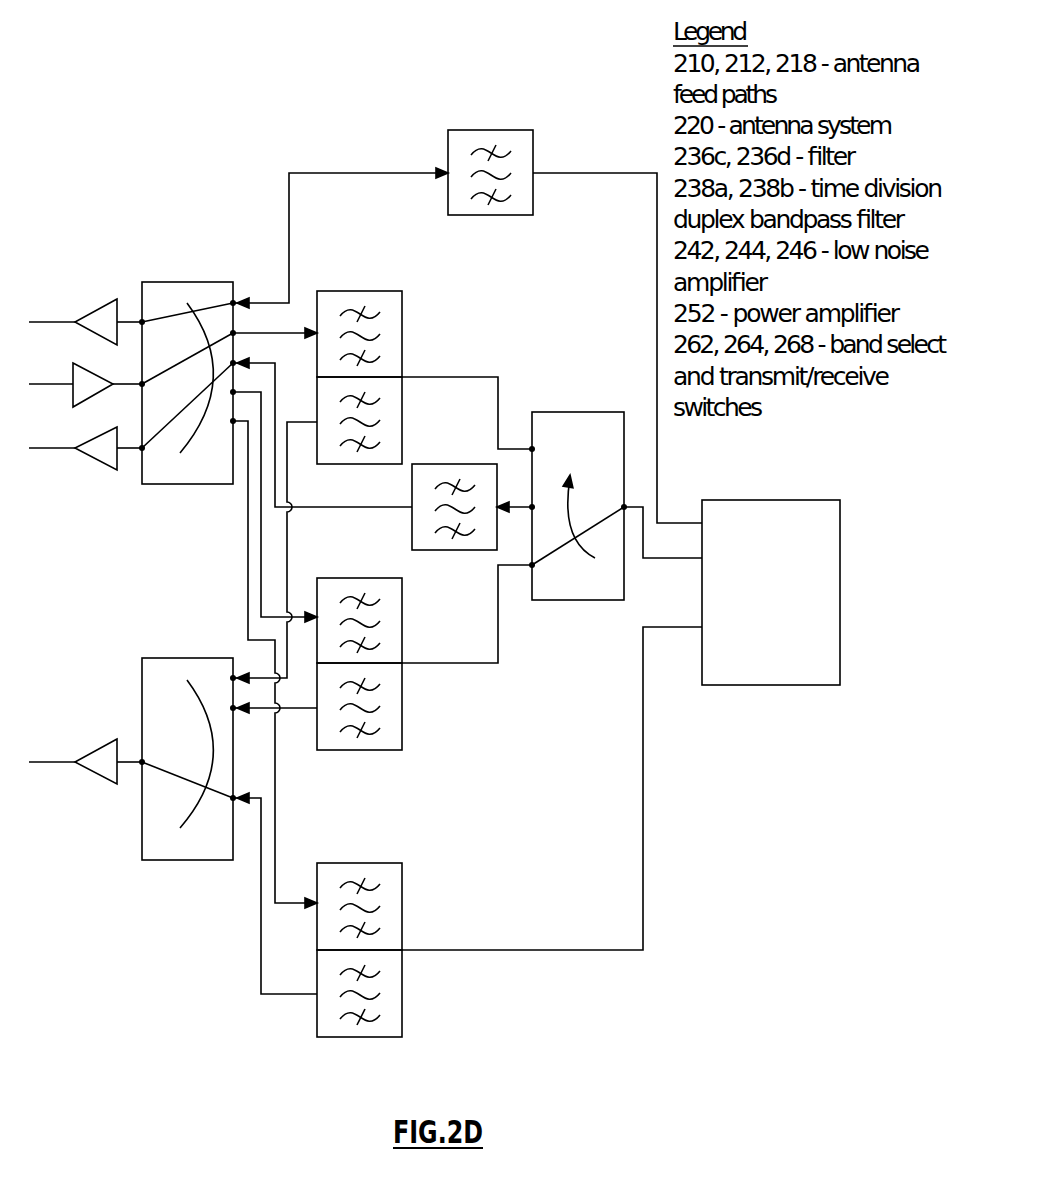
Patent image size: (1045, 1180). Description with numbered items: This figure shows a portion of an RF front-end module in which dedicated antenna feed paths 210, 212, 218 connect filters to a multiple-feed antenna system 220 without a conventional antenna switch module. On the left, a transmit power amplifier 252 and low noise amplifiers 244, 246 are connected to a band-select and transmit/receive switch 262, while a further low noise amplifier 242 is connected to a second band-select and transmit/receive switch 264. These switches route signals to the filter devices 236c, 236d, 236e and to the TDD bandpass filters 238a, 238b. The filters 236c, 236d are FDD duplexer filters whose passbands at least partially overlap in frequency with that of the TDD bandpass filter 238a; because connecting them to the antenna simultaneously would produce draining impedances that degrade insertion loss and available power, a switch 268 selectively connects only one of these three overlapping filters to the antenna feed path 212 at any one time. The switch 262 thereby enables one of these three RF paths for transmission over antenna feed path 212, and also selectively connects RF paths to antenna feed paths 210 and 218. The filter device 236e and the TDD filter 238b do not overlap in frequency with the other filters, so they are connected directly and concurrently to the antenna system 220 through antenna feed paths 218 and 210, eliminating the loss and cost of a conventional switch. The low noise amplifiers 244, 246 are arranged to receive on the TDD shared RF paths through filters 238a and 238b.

The antenna feed path 210 is at (666, 508).
The antenna feed path 212 is at (677, 560).
The antenna feed path 218 is at (643, 872).
The antenna system 220 is at (782, 500).
The filter device 236c is at (398, 279).
The filter device 236d is at (421, 718).
The filter device 236e is at (421, 1004).
The TDD bandpass filter 238a is at (483, 463).
The TDD filter 238b is at (510, 130).
The low noise amplifier 242 is at (96, 731).
The low noise amplifier 244 is at (105, 483).
The low noise amplifier 246 is at (97, 290).
The transmit power amplifier 252 is at (86, 359).
The band-select and transmit/receive switch 262 is at (194, 270).
The band-select and transmit/receive switch 264 is at (190, 646).
The switch 268 is at (574, 411).